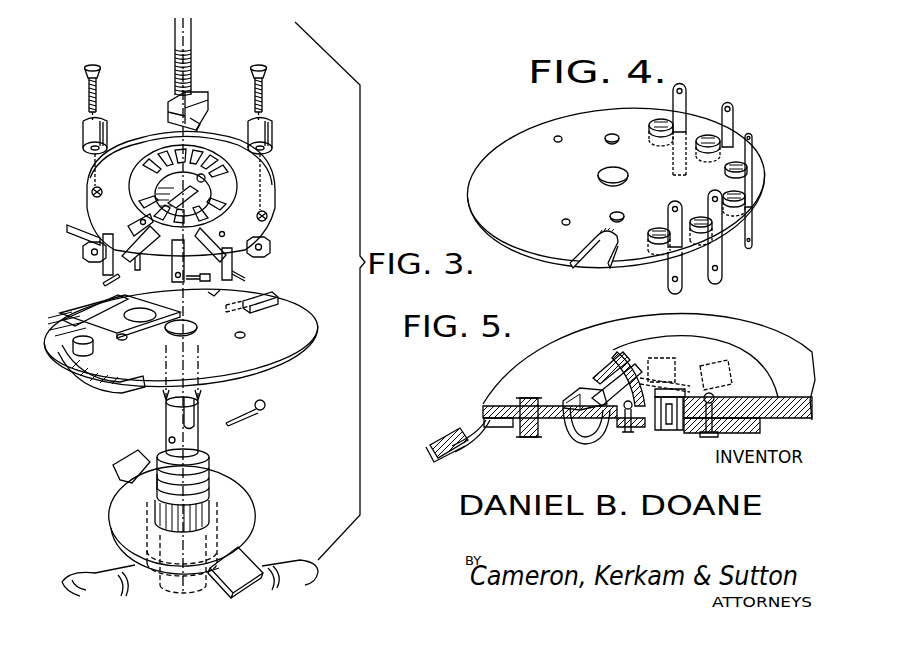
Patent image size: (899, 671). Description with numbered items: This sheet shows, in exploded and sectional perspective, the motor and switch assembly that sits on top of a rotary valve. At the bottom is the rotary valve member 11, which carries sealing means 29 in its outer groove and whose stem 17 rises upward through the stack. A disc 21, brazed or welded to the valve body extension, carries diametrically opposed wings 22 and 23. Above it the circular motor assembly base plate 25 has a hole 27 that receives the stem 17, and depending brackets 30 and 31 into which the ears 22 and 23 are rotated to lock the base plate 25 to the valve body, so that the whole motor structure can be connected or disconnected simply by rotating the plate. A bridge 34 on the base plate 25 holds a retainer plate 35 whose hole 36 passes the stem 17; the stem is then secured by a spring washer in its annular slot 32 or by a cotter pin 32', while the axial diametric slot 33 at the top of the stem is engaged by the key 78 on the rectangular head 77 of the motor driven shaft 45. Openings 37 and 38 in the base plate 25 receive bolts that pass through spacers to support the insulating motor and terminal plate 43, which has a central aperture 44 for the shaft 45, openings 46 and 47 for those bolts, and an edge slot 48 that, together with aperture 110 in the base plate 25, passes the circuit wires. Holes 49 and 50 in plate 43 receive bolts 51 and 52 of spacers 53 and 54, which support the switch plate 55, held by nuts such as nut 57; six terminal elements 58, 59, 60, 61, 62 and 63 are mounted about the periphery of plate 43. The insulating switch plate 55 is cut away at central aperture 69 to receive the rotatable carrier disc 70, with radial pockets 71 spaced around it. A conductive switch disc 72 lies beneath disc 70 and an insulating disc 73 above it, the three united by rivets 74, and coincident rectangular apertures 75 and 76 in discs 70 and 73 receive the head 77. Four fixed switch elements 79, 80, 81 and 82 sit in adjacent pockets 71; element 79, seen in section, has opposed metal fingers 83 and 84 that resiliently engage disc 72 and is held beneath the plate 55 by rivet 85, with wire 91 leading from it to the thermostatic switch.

In FIG. 3, the rotary valve member 11 is at (211, 482).
In FIG. 3, the valve stem 17 is at (188, 441).
In FIG. 3, the disc 21 is at (250, 507).
In FIG. 3, the wing 22 is at (243, 566).
In FIG. 3, the wing 23 is at (130, 457).
In FIG. 3, the motor assembly base plate 25 is at (307, 310).
In FIG. 3, the hole 27 is at (193, 324).
In FIG. 3, the sealing means 29 is at (157, 481).
In FIG. 3, the depending bracket 30 is at (260, 296).
In FIG. 3, the depending bracket 31 is at (118, 385).
In FIG. 3, the annular slot 32 is at (161, 424).
In FIG. 3, the cotter pin 32' is at (266, 413).
In FIG. 3, the axial diametric slot 33 is at (196, 410).
In FIG. 3, the bridge 34 is at (97, 318).
In FIG. 3, the retainer plate 35 is at (112, 315).
In FIG. 3, the hole 36 is at (158, 311).
In FIG. 3, the opening 37 is at (125, 340).
In FIG. 3, the opening 38 is at (240, 338).
In FIG. 4, the motor and terminal plate 43 is at (537, 173).
In FIG. 4, the central aperture 44 is at (622, 172).
In FIG. 3, the motor driven shaft 45 is at (174, 43).
In FIG. 4, the opening 46 is at (555, 136).
In FIG. 4, the opening 47 is at (563, 220).
In FIG. 4, the slot 48 is at (583, 250).
In FIG. 4, the hole 49 is at (609, 134).
In FIG. 4, the hole 50 is at (623, 215).
In FIG. 3, the bolt 51 is at (74, 92).
In FIG. 3, the bolt 52 is at (263, 84).
In FIG. 3, the spacer 53 is at (82, 130).
In FIG. 3, the spacer 54 is at (268, 128).
In FIG. 3, the switch plate 55 is at (248, 168).
In FIG. 5, the switch plate 55 is at (697, 318).
In FIG. 3, the nut 57 is at (270, 246).
In FIG. 4, the electrical terminal element 58 is at (670, 222).
In FIG. 4, the electrical terminal element 59 is at (723, 220).
In FIG. 4, the electrical terminal element 60 is at (752, 182).
In FIG. 4, the electrical terminal element 61 is at (754, 148).
In FIG. 4, the electrical terminal element 62 is at (735, 113).
In FIG. 4, the electrical terminal element 63 is at (687, 90).
In FIG. 3, the central aperture 69 is at (141, 172).
In FIG. 5, the central aperture 69 is at (618, 387).
In FIG. 5, the carrier disc 70 is at (660, 431).
In FIG. 5, the radially disposed pocket 71 is at (608, 368).
In FIG. 3, the conductive metal switch disc 72 is at (226, 198).
In FIG. 5, the conductive metal switch disc 72 is at (618, 428).
In FIG. 5, the insulating disc 73 is at (753, 373).
In FIG. 3, the rivet 74 is at (204, 175).
In FIG. 5, the rivet 74 is at (709, 437).
In FIG. 3, the rectangular aperture 75 is at (175, 200).
In FIG. 5, the rectangular aperture 75 is at (670, 425).
In FIG. 5, the rectangular aperture 76 is at (670, 390).
In FIG. 3, the rectangular head 77 is at (190, 102).
In FIG. 3, the key 78 is at (194, 128).
In FIG. 3, the fixed electrical switch element 79 is at (142, 230).
In FIG. 5, the fixed electrical switch element 79 is at (500, 428).
In FIG. 3, the fixed electrical switch element 80 is at (144, 248).
In FIG. 3, the fixed electrical switch element 81 is at (172, 262).
In FIG. 3, the fixed electrical switch element 82 is at (204, 258).
In FIG. 5, the metal finger 83 is at (573, 392).
In FIG. 5, the metal finger 84 is at (578, 437).
In FIG. 5, the rivet 85 is at (522, 397).
In FIG. 5, the wire 91 is at (443, 445).
In FIG. 3, the aperture 110 is at (82, 345).